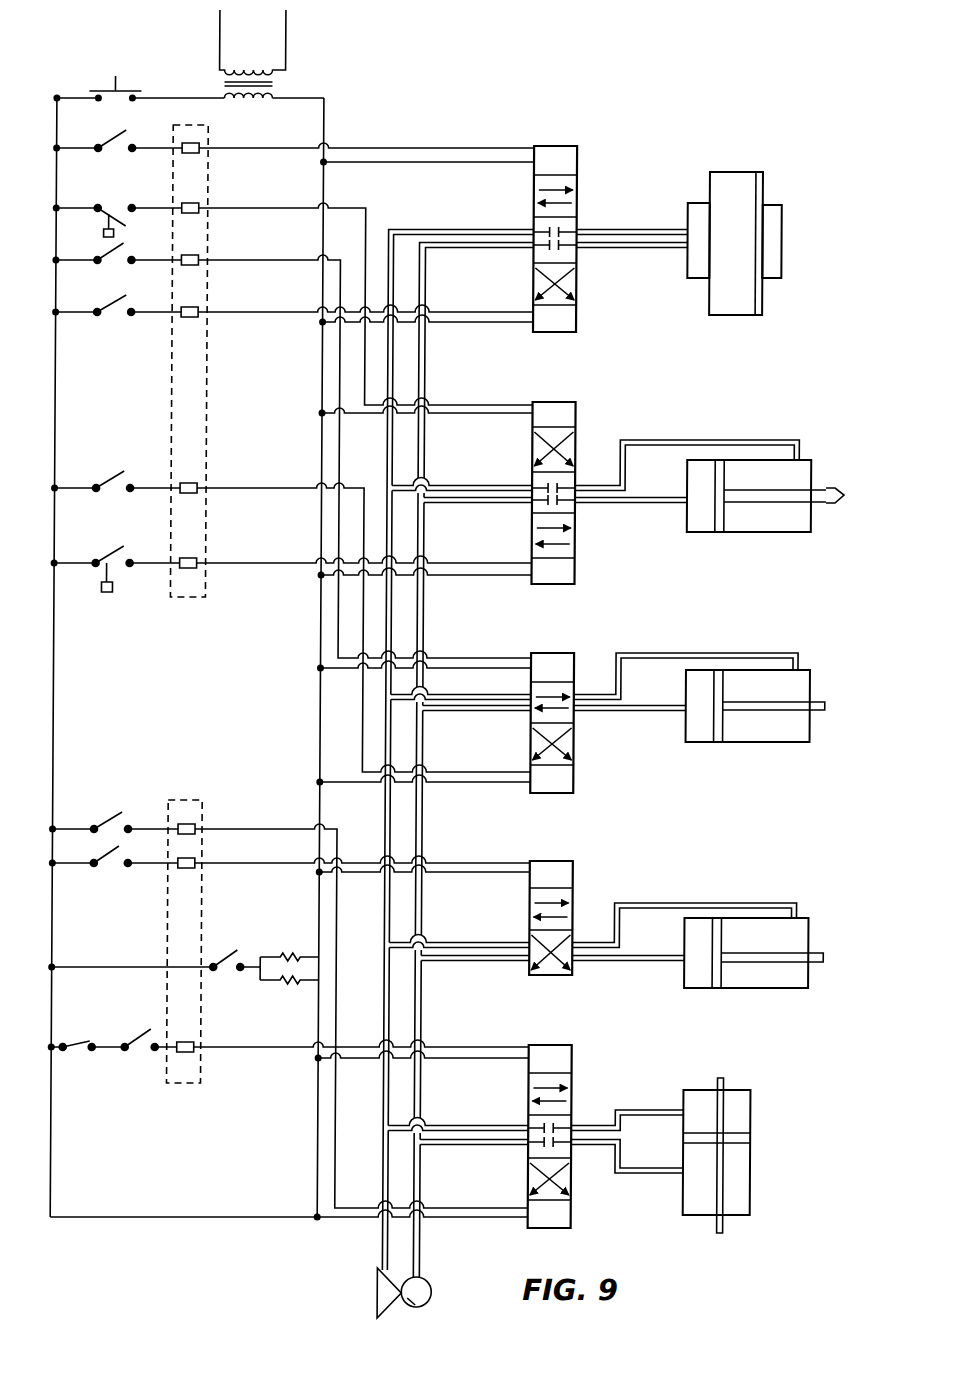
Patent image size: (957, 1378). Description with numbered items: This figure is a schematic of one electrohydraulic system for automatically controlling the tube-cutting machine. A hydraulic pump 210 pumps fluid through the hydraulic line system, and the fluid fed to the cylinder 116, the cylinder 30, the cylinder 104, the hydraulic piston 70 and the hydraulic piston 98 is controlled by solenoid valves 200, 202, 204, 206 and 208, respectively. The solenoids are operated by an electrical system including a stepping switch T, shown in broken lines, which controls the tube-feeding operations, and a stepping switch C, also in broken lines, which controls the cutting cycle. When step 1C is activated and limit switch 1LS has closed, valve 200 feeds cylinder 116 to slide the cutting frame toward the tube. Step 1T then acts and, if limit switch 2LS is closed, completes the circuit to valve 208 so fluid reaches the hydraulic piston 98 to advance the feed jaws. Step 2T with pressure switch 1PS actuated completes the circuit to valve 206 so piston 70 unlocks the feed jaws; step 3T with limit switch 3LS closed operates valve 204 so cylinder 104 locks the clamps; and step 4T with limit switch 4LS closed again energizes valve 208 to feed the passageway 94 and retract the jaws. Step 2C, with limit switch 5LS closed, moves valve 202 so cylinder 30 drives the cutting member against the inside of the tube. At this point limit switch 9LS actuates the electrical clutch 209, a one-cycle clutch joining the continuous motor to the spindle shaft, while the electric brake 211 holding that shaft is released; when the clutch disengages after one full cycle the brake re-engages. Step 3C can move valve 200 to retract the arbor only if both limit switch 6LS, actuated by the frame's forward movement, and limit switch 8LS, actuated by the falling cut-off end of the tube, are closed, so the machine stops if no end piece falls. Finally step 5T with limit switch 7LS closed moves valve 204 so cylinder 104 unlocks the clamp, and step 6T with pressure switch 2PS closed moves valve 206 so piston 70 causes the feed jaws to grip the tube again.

The limit switch 2LS is at (116, 134).
The pressure switch 1PS is at (112, 213).
The limit switch 3LS is at (112, 254).
The limit switch 4LS is at (113, 312).
The limit switch 7LS is at (117, 476).
The pressure switch 2PS is at (118, 553).
The limit switch 1LS is at (114, 818).
The limit switch 5LS is at (112, 860).
The limit switch 9LS is at (231, 958).
The limit switch 8LS is at (80, 1043).
The limit switch 6LS is at (139, 1040).
The step of stepping switch T 1T is at (201, 143).
The step of stepping switch T 2T is at (201, 204).
The step of stepping switch T 3T is at (201, 256).
The step of stepping switch T 4T is at (201, 308).
The step of stepping switch T 5T is at (201, 484).
The step of stepping switch T 6T is at (201, 559).
The stepping switch T is at (203, 379).
The step of stepping switch C 1C is at (182, 823).
The step of stepping switch C 2C is at (195, 868).
The step of stepping switch C 3C is at (193, 1052).
The stepping switch C is at (204, 817).
The electrical clutch 209 is at (290, 956).
The electric brake 211 is at (298, 981).
The solenoid valve 208 is at (578, 186).
The solenoid valve 206 is at (578, 436).
The solenoid valve 204 is at (578, 664).
The solenoid valve 202 is at (578, 882).
The solenoid valve 200 is at (578, 1082).
The passageway 94 is at (677, 250).
The hydraulic piston 98 is at (766, 195).
The hydraulic piston 70 is at (792, 534).
The hydraulic cylinder 104 is at (792, 742).
The hydraulic cylinder 30 is at (790, 988).
The hydraulic cylinder 116 is at (757, 1178).
The hydraulic pump 210 is at (428, 1304).